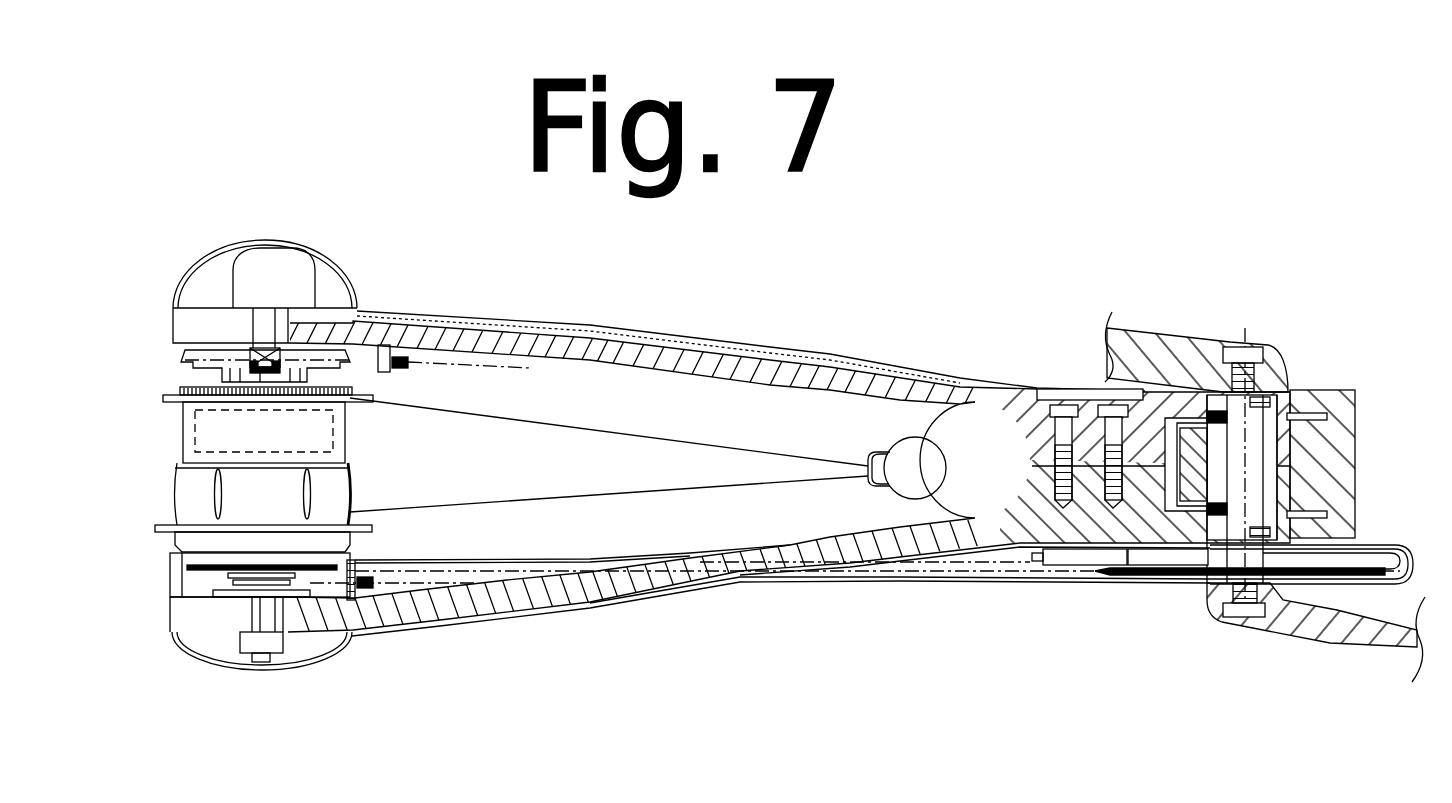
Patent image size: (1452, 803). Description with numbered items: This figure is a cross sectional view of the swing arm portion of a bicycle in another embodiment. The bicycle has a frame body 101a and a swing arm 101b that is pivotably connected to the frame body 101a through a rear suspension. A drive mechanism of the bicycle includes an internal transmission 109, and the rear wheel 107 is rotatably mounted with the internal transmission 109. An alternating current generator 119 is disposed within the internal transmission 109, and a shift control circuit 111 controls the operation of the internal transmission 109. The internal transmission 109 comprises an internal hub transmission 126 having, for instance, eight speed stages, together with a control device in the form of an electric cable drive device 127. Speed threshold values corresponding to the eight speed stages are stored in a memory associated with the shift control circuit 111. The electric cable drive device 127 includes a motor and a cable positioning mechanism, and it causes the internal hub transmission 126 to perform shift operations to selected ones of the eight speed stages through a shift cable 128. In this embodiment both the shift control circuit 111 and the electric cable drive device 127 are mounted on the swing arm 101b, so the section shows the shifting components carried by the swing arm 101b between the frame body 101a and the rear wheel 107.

The frame body 101a is at (1392, 440).
The swing arm 101b is at (958, 533).
The rear wheel 107 is at (923, 455).
The internal transmission 109 is at (368, 484).
The shift control circuit 111 is at (1178, 557).
The alternating current generator 119 is at (345, 432).
The internal hub transmission 126 is at (333, 515).
The electric cable drive device 127 is at (1072, 557).
The shift cable 128 is at (414, 583).